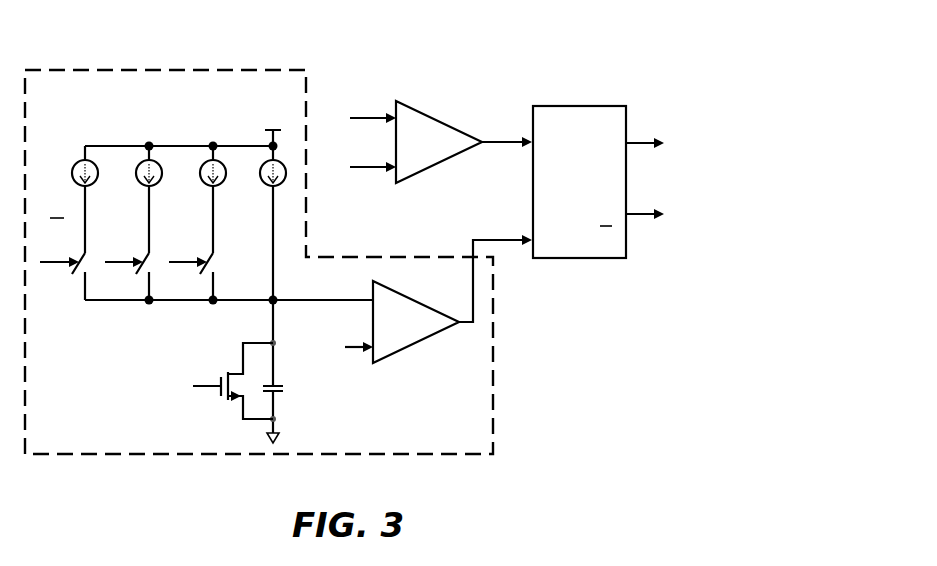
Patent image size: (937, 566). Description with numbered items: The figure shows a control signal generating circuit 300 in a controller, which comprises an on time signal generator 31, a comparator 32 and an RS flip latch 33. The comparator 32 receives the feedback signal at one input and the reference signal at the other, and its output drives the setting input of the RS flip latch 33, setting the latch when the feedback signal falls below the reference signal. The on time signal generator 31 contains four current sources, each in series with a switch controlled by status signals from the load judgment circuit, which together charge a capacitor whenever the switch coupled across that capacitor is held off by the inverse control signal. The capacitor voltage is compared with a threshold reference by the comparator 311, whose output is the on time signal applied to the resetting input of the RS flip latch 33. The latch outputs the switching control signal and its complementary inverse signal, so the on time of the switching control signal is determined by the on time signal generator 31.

The control signal generating circuit 300 is at (695, 41).
The on time signal generator 31 is at (494, 406).
The comparator 32 is at (458, 130).
The RS flip latch 33 is at (626, 106).
The comparator 311 is at (432, 309).